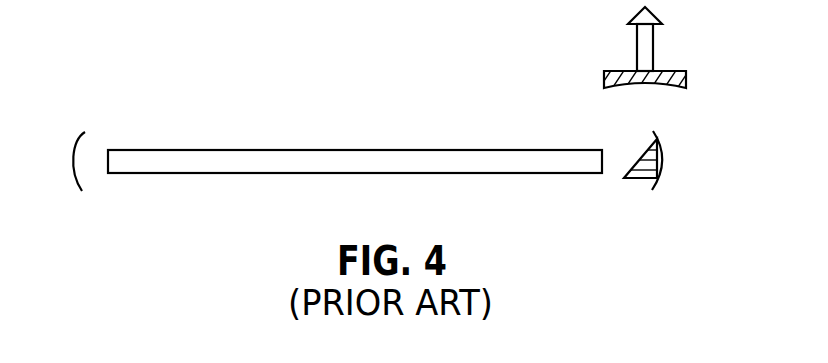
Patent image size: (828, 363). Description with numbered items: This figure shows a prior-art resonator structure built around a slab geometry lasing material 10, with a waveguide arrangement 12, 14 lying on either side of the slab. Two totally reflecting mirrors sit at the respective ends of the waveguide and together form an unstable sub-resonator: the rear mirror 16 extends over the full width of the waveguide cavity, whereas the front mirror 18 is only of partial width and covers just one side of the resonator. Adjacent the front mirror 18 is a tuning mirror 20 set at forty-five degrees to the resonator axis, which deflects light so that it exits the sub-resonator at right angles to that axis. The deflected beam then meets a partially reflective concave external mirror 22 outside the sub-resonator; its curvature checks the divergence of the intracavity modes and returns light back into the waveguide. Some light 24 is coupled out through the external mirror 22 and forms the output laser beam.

The slab geometry lasing material 10 is at (272, 158).
The waveguide arrangement 12 is at (397, 150).
The waveguide arrangement 14 is at (392, 173).
The rear mirror 16 is at (74, 143).
The front mirror 18 is at (666, 142).
The tuning mirror 20 is at (643, 178).
The external mirror 22 is at (604, 76).
The light 24 is at (628, 16).